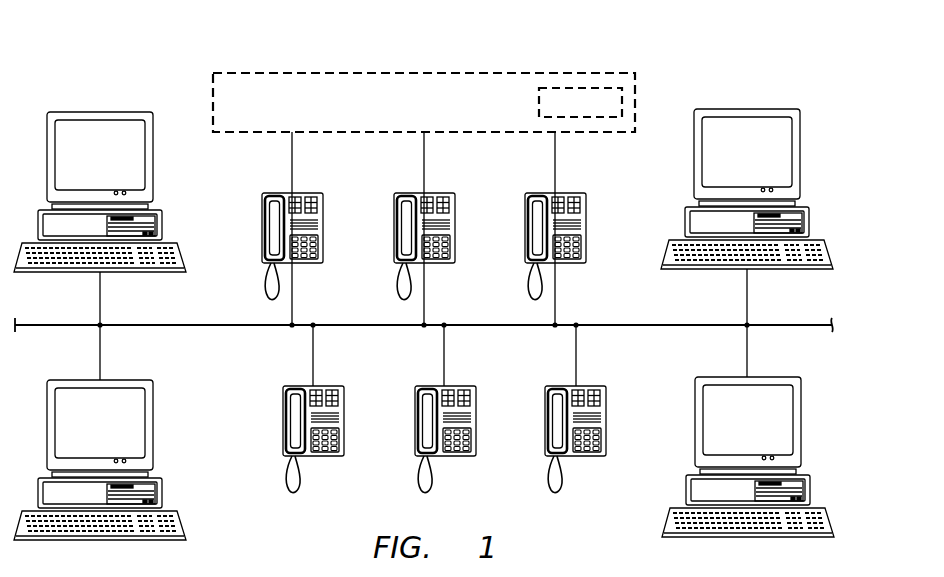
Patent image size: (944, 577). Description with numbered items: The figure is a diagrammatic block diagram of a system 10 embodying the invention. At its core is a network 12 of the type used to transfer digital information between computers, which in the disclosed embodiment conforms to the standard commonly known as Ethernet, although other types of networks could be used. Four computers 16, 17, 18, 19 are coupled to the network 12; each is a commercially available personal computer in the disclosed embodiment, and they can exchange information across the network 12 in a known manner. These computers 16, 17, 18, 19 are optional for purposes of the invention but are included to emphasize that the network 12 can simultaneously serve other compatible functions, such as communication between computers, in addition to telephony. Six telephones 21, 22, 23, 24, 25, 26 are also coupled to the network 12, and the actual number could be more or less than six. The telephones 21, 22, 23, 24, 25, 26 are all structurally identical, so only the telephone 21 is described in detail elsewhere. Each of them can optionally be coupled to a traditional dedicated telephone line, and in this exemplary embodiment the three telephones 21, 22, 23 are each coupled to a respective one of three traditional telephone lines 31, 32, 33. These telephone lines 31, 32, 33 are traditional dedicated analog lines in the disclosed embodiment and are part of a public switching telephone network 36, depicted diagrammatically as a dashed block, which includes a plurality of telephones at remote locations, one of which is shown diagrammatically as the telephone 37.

The system 10 is at (97, 53).
The network 12 is at (200, 328).
The computer 16 is at (153, 162).
The computer 17 is at (153, 425).
The computer 18 is at (694, 160).
The computer 19 is at (695, 422).
The telephone 21 is at (262, 229).
The telephone 22 is at (394, 229).
The telephone 23 is at (525, 229).
The telephone 24 is at (283, 421).
The telephone 25 is at (415, 421).
The telephone 26 is at (545, 421).
The telephone line 31 is at (292, 172).
The telephone line 32 is at (424, 172).
The telephone line 33 is at (555, 172).
The public switching telephone network 36 is at (287, 113).
The telephone 37 is at (578, 88).